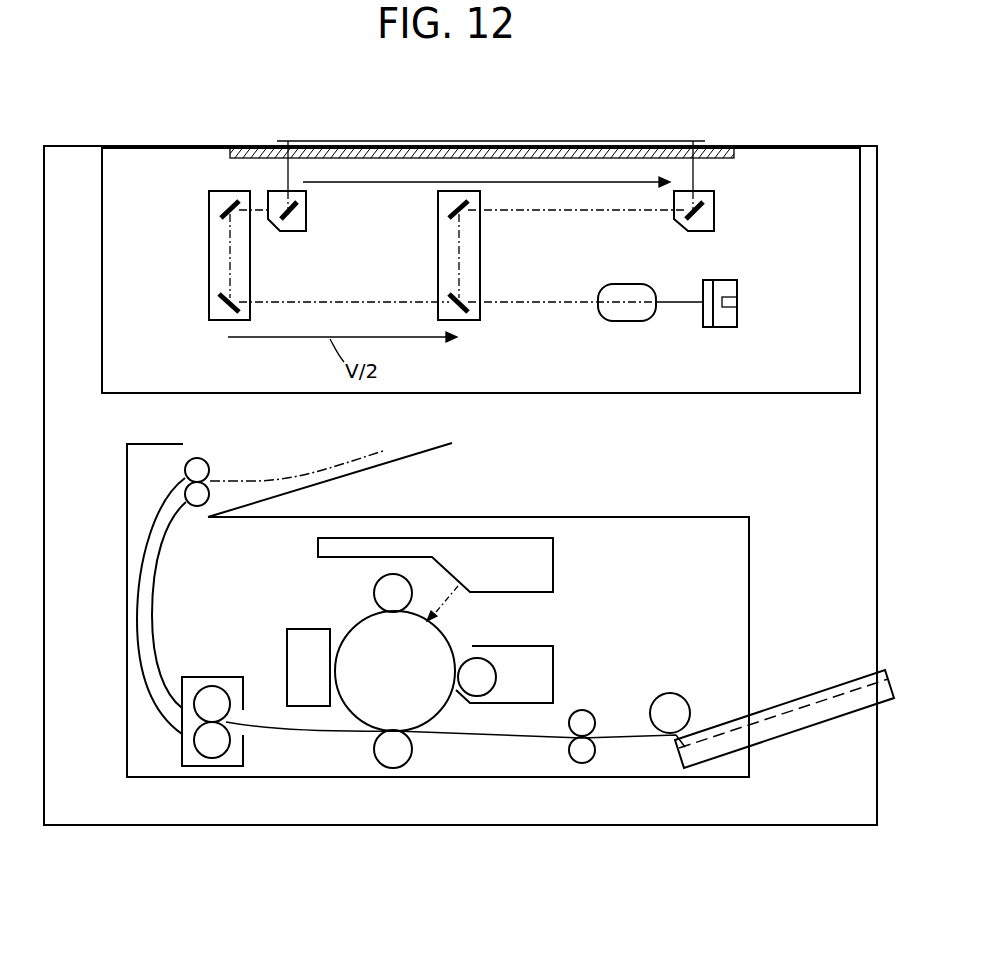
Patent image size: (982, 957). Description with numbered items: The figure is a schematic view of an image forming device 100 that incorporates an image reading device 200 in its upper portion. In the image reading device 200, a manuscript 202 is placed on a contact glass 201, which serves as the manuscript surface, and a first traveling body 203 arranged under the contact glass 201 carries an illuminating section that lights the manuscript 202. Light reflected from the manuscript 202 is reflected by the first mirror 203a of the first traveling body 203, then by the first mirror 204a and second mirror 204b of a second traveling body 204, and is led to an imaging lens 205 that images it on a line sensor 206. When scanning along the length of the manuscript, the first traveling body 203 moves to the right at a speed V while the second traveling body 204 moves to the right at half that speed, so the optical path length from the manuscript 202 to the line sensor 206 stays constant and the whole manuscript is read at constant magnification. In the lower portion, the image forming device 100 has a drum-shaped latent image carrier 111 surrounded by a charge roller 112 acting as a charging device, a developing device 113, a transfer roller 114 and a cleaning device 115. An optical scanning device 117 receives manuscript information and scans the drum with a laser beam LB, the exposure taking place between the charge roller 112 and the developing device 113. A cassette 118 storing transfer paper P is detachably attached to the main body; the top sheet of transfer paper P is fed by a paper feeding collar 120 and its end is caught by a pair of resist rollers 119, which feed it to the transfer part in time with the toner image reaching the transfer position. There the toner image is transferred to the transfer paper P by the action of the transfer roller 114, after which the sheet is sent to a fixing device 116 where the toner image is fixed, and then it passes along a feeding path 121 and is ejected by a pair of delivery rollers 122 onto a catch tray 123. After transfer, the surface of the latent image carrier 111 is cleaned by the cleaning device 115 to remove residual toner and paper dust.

The image forming device 100 is at (750, 552).
The latent image carrier 111 is at (350, 625).
The charge roller 112 is at (376, 585).
The developing device 113 is at (556, 655).
The transfer roller 114 is at (413, 745).
The cleaning device 115 is at (287, 632).
The fixing device 116 is at (205, 677).
The optical scanning device 117 is at (553, 562).
The cassette 118 is at (783, 745).
The pair of resist rollers 119 is at (594, 711).
The paper feeding collar 120 is at (685, 695).
The feeding path 121 is at (157, 580).
The pair of delivery rollers 122 is at (207, 460).
The catch tray 123 is at (425, 455).
The image reading device 200 is at (798, 162).
The contact glass 201 is at (245, 146).
The manuscript 202 is at (462, 141).
The first traveling body 203 is at (321, 228).
The first mirror 203a is at (294, 224).
The second traveling body 204 is at (192, 255).
The first mirror 204a is at (221, 210).
The second mirror 204b is at (219, 303).
The imaging lens 205 is at (618, 284).
The line sensor 206 is at (737, 290).
The transfer paper P is at (298, 472).
The laser beam LB is at (448, 604).
The speed of first traveling body V is at (528, 182).